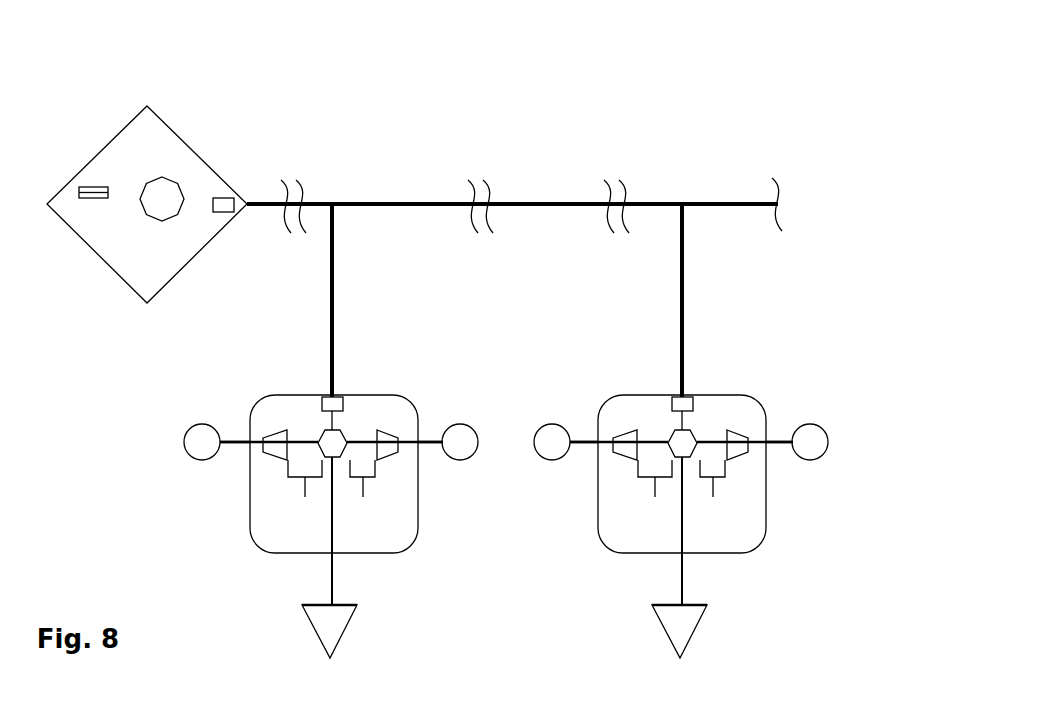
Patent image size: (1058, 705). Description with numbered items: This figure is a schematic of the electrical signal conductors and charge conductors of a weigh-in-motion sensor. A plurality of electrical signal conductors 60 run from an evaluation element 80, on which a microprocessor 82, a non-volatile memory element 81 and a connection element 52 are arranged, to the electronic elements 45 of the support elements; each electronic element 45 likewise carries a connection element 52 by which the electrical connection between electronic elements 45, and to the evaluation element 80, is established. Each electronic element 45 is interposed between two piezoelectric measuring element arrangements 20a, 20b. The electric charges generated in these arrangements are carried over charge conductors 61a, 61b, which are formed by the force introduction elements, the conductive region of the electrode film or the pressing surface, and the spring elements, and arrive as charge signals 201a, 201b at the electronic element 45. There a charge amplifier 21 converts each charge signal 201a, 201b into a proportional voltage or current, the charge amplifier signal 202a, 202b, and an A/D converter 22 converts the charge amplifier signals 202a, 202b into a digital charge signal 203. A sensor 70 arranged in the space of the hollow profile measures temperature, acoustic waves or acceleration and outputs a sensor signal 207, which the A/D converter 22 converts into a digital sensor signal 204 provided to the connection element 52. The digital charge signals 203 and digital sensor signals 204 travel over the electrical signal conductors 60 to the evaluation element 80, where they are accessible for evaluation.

The evaluation element 80 is at (162, 104).
The non-volatile memory element 81 is at (98, 185).
The microprocessor 82 is at (173, 193).
The connection element 52 is at (227, 203).
The electrical signal conductor 60 is at (265, 215).
The digital charge signal 203 is at (465, 278).
The digital sensor signal 204 is at (350, 397).
The electronic element 45 is at (424, 551).
The charge signal 201a is at (255, 436).
The charge signal 201b is at (437, 437).
The piezoelectric measuring element arrangement 20a is at (200, 452).
The piezoelectric measuring element arrangement 20b is at (463, 445).
The A/D converter 22 is at (338, 440).
The charge amplifier 21 is at (275, 443).
The charge amplifier signal 202a is at (464, 496).
The charge amplifier signal 202b is at (556, 496).
The charge conductor 61a is at (236, 455).
The charge conductor 61b is at (433, 450).
The sensor signal 207 is at (338, 468).
The sensor 70 is at (335, 637).